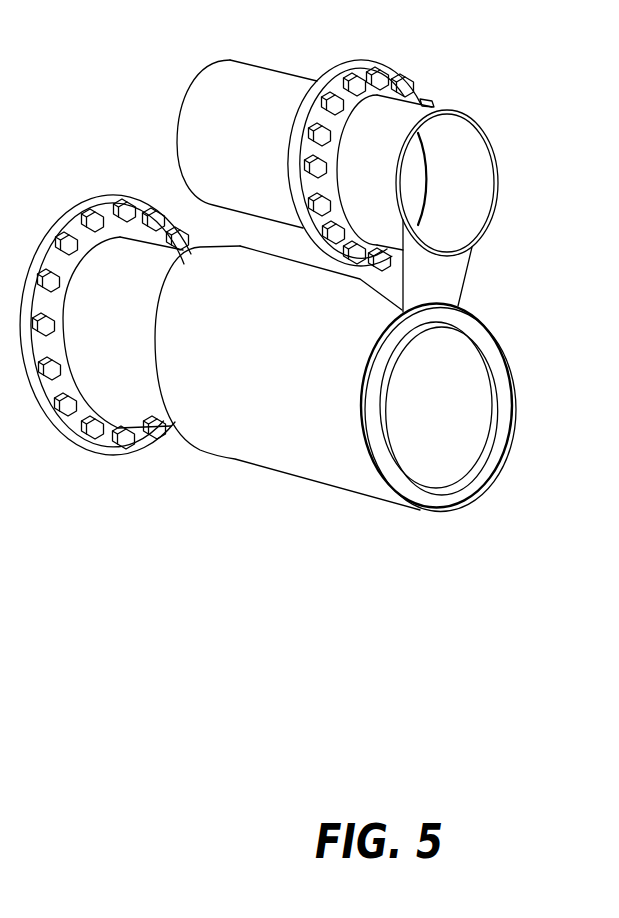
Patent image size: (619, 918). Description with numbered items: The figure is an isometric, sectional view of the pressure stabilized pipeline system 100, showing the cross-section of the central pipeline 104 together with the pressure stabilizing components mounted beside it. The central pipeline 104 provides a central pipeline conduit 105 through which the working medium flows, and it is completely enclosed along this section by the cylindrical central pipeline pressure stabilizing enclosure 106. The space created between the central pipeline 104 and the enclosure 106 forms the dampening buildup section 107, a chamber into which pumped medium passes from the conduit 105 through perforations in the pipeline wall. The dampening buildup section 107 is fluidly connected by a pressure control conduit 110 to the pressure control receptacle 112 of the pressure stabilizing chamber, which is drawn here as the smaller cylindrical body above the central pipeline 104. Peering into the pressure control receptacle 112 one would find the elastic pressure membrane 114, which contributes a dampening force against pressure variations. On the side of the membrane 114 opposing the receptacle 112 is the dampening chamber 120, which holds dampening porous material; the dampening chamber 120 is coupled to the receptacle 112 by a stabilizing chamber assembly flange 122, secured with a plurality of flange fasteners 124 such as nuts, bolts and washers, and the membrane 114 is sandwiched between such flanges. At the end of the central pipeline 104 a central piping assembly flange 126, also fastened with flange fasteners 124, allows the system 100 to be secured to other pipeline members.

The pressure stabilized pipeline system 100 is at (358, 546).
The central pipeline 104 is at (487, 415).
The central pipeline conduit 105 is at (435, 382).
The cylindrical central pipeline pressure stabilizing enclosure 106 is at (505, 451).
The dampening buildup section 107 is at (478, 476).
The pressure control conduit 110 is at (447, 275).
The pressure control receptacle 112 is at (480, 201).
The elastic pressure membrane 114 is at (412, 162).
The dampening chamber 120 is at (200, 107).
The stabilizing chamber assembly flange 122 is at (401, 76).
The flange fastener 124 is at (423, 79).
The central piping assembly flange 126 is at (120, 450).